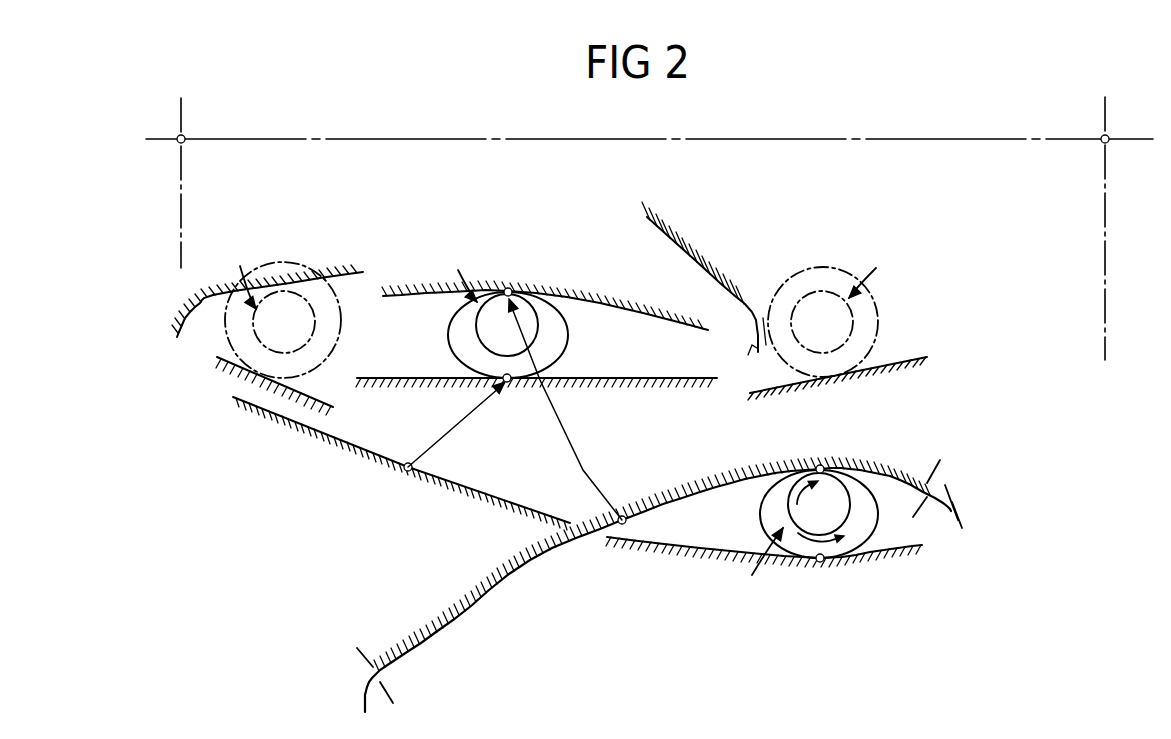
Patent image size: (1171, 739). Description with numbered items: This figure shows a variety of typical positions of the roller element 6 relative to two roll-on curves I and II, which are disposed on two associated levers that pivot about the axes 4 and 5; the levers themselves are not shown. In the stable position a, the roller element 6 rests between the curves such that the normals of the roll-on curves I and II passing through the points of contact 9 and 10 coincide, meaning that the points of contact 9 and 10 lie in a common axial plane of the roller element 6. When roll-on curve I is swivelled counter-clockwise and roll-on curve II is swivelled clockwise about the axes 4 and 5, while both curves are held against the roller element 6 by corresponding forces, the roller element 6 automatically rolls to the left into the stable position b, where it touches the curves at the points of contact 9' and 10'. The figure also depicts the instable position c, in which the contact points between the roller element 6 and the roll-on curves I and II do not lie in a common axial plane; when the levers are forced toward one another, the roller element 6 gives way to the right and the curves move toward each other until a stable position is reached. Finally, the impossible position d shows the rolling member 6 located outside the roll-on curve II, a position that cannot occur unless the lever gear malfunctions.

The axis 4 is at (181, 139).
The axis 5 is at (1105, 139).
The roller element 6 is at (325, 318).
The point of contact 9 is at (808, 590).
The point of contact 9' is at (514, 410).
The point of contact 10 is at (842, 444).
The point of contact 10' is at (543, 270).
The stable position a is at (752, 575).
The stable position b is at (458, 270).
The instable position c is at (240, 266).
The impossible position d is at (876, 268).
The roll-on curve I is at (893, 548).
The roll-on curve II is at (886, 480).